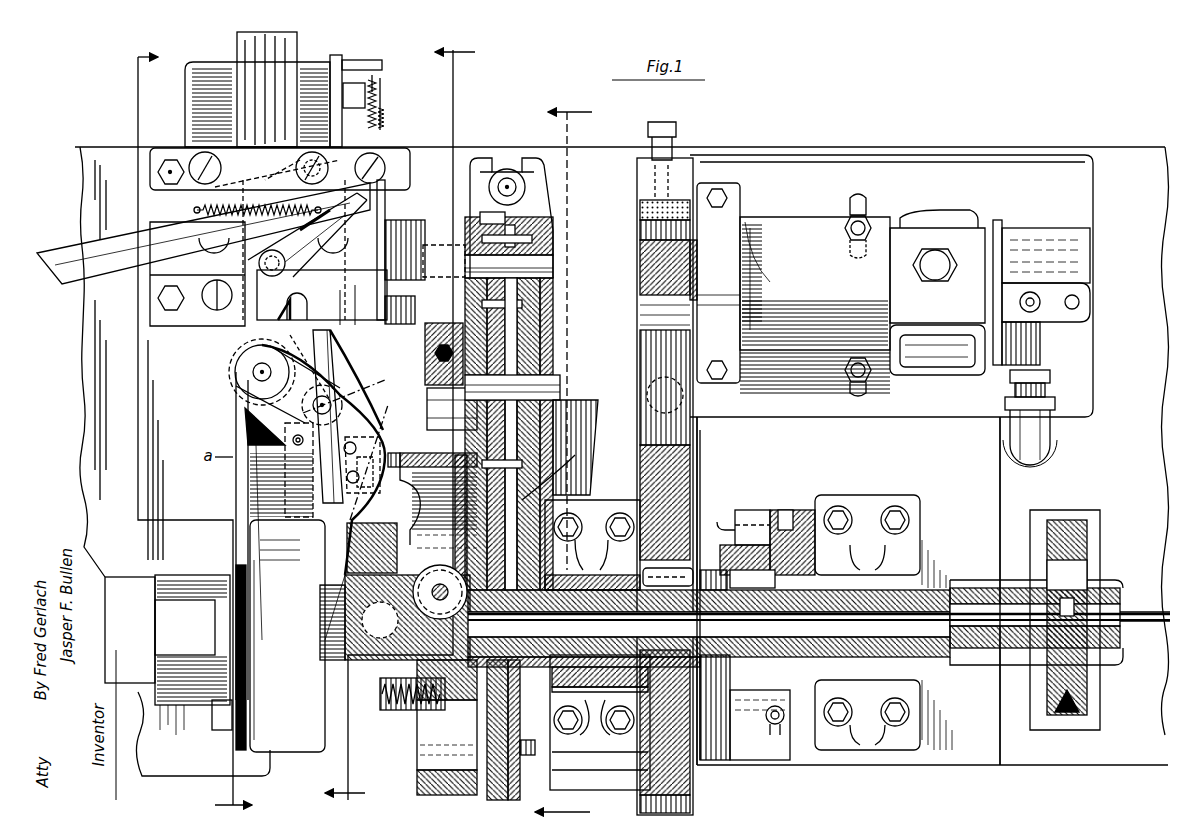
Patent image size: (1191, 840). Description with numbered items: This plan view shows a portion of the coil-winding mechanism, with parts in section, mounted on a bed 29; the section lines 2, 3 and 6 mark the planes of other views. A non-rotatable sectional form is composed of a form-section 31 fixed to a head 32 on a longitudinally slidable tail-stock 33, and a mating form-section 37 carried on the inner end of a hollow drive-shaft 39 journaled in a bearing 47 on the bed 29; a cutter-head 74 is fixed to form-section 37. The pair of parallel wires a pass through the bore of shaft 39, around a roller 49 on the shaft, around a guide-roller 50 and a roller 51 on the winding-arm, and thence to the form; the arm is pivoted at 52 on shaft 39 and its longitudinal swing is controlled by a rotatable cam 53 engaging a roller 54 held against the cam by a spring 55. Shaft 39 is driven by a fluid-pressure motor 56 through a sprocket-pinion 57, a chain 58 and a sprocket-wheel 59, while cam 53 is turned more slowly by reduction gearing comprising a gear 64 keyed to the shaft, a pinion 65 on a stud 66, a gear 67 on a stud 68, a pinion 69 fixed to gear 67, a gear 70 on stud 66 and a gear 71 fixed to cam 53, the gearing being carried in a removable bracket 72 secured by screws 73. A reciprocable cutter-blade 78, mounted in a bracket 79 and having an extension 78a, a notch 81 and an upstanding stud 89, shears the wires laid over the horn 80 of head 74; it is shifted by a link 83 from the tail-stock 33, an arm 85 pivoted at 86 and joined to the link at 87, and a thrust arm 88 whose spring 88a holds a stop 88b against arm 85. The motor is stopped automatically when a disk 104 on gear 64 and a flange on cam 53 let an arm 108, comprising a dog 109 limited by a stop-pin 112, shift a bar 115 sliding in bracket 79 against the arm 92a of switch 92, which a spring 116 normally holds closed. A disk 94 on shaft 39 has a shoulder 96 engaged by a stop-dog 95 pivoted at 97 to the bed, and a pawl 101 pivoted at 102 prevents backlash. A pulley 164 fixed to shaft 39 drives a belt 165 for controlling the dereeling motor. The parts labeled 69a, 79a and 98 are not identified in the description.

The section line 2- 2 is at (565, 452).
The section line 3- 3 is at (400, 417).
The section line 6- 6 is at (187, 426).
The bed 29 is at (93, 160).
The form-section 31 is at (218, 732).
The head 32 is at (186, 708).
The tail-stock 33 is at (130, 630).
The form-section 37 is at (312, 719).
The hollow drive-shaft 39 is at (718, 645).
The bearing 47 is at (598, 500).
The roller 49 is at (446, 566).
The guide-roller 50 is at (370, 392).
The roller 51 is at (236, 366).
The pivot 52 is at (380, 602).
The cam 53 is at (395, 571).
The roller 54 is at (400, 450).
The spring 55 is at (410, 708).
The rotary motor 56 is at (915, 330).
The sprocket-pinion 57 is at (692, 242).
The chain 58 is at (680, 205).
The sprocket-wheel 59 is at (700, 462).
The gear 64 is at (560, 446).
The pinion 65 is at (540, 348).
The stud 66 is at (545, 388).
The gear 67 is at (530, 226).
The stud 68 is at (540, 270).
The pinion 69 is at (470, 222).
The clamp block 69a is at (552, 762).
The gear 70 is at (530, 330).
The gear 71 is at (511, 738).
The removable bracket 72 is at (555, 294).
The screws 73 is at (508, 180).
The cutter-head 74 is at (281, 470).
The cutter-blade 78 is at (293, 43).
The extension 78a is at (351, 320).
The bracket 79 is at (186, 262).
The block 79a is at (455, 245).
The inclined guide or horn 80 is at (240, 420).
The notch 81 is at (282, 320).
The link 83 is at (203, 233).
The arm 85 is at (268, 152).
The pivot 86 is at (198, 155).
The pivot 87 is at (298, 168).
The thrust arm 88 is at (312, 258).
The spring 88a is at (257, 220).
The stop 88b is at (425, 222).
The stud 89 is at (258, 264).
The switch 92 is at (257, 104).
The switch arm 92a is at (343, 60).
The disk 94 is at (760, 570).
The stop-dog 95 is at (775, 510).
The shoulder 96 is at (345, 380).
The pivot 97 is at (745, 512).
The clamp 98 is at (920, 562).
The pawl 101 is at (762, 728).
The pivot 102 is at (737, 718).
The disk 104 is at (545, 800).
The arm 108 is at (372, 322).
The dog 109 is at (452, 409).
The stop-pin 112 is at (440, 245).
The bar 115 is at (386, 122).
The spring 116 is at (385, 108).
The pulley 164 is at (1090, 546).
The belt 165 is at (1070, 722).
The wires a is at (819, 627).